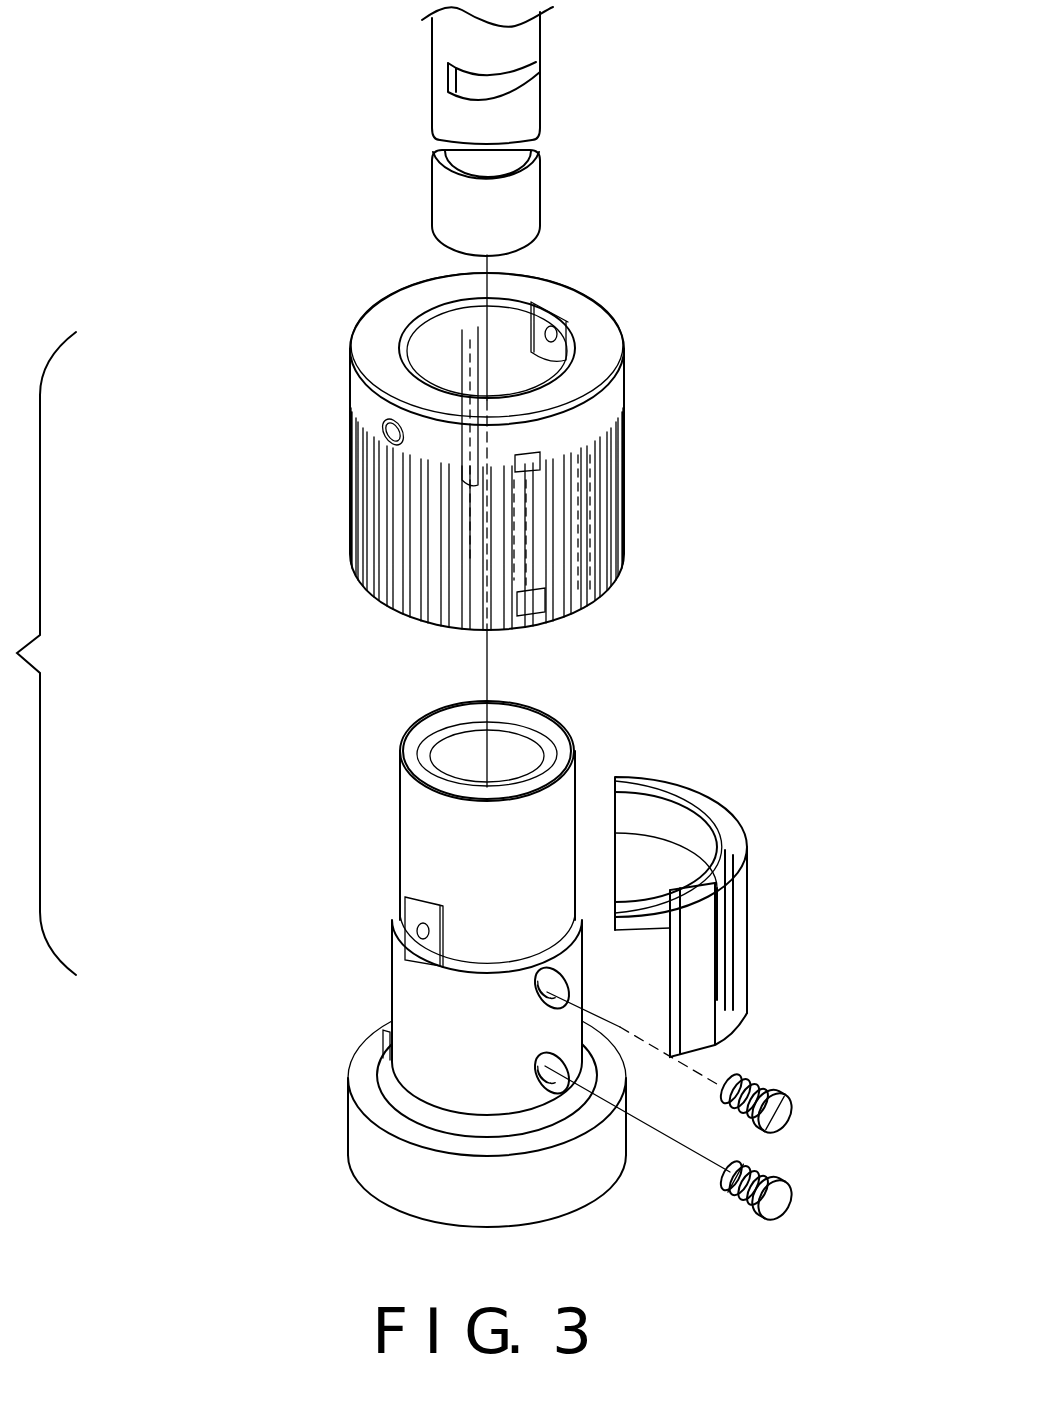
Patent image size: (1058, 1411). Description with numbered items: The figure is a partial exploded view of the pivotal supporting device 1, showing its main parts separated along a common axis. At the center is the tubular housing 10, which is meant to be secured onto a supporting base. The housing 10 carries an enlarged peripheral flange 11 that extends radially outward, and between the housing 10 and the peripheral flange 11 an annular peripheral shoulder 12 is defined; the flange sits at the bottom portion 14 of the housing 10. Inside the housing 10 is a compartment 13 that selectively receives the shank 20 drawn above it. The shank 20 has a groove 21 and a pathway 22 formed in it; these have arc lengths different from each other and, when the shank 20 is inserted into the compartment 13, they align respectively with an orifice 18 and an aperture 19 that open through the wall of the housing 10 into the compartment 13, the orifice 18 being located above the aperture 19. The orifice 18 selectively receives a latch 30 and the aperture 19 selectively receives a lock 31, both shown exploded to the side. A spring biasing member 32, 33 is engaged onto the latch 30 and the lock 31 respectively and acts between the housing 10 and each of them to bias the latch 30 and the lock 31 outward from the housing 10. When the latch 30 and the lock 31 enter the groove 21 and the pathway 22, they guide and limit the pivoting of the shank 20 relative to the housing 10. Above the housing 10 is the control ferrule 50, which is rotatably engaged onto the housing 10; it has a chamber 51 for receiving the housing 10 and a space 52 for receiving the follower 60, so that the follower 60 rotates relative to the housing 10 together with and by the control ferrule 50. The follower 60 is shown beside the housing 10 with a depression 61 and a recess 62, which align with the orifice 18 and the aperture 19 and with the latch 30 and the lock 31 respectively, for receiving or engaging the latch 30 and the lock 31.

The pivotal supporting device 1 is at (712, 317).
The housing 10 is at (415, 988).
The peripheral flange 11 is at (367, 1143).
The peripheral shoulder 12 is at (370, 1062).
The compartment 13 is at (508, 742).
The bottom portion 14 is at (425, 1200).
The orifice 18 is at (608, 1022).
The aperture 19 is at (549, 1085).
The shank 20 is at (458, 40).
The groove 21 is at (537, 80).
The pathway 22 is at (533, 157).
The latch 30 is at (783, 1117).
The lock 31 is at (773, 1207).
The spring biasing member 32 is at (762, 1085).
The spring biasing member 33 is at (728, 1200).
The control ferrule 50 is at (383, 343).
The chamber 51 is at (505, 372).
The space 52 is at (608, 412).
The follower 60 is at (720, 810).
The depression 61 is at (652, 813).
The recess 62 is at (660, 855).